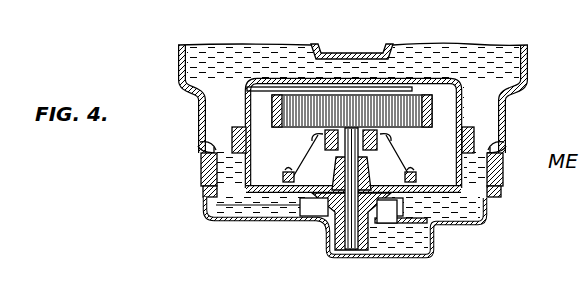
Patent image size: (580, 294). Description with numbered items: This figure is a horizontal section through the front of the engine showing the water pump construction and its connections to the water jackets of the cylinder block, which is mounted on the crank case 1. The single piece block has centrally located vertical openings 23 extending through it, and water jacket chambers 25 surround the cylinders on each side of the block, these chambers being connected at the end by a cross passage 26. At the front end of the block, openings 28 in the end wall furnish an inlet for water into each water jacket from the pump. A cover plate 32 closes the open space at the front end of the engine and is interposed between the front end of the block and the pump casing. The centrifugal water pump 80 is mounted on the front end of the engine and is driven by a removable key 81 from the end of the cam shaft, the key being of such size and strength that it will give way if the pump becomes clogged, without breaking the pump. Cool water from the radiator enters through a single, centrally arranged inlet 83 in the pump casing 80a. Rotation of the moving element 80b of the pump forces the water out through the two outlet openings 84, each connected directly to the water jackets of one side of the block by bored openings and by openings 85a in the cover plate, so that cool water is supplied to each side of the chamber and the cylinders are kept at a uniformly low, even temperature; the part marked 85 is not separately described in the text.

The crank case 1 is at (178, 75).
The vertical openings 23 is at (330, 47).
The water jacket chambers 25 is at (207, 52).
The cross passage 26 is at (358, 70).
The openings 28 is at (201, 172).
The cover plate 32 is at (200, 160).
The centrifugal water pump 80 is at (318, 225).
The pump casing 80a is at (468, 223).
The moving element 80b is at (276, 223).
The removable key 81 is at (376, 153).
The inlet 83 is at (390, 256).
The outlet openings 84 is at (220, 215).
The lip 85 is at (200, 146).
The openings in cover plate 85a is at (525, 194).